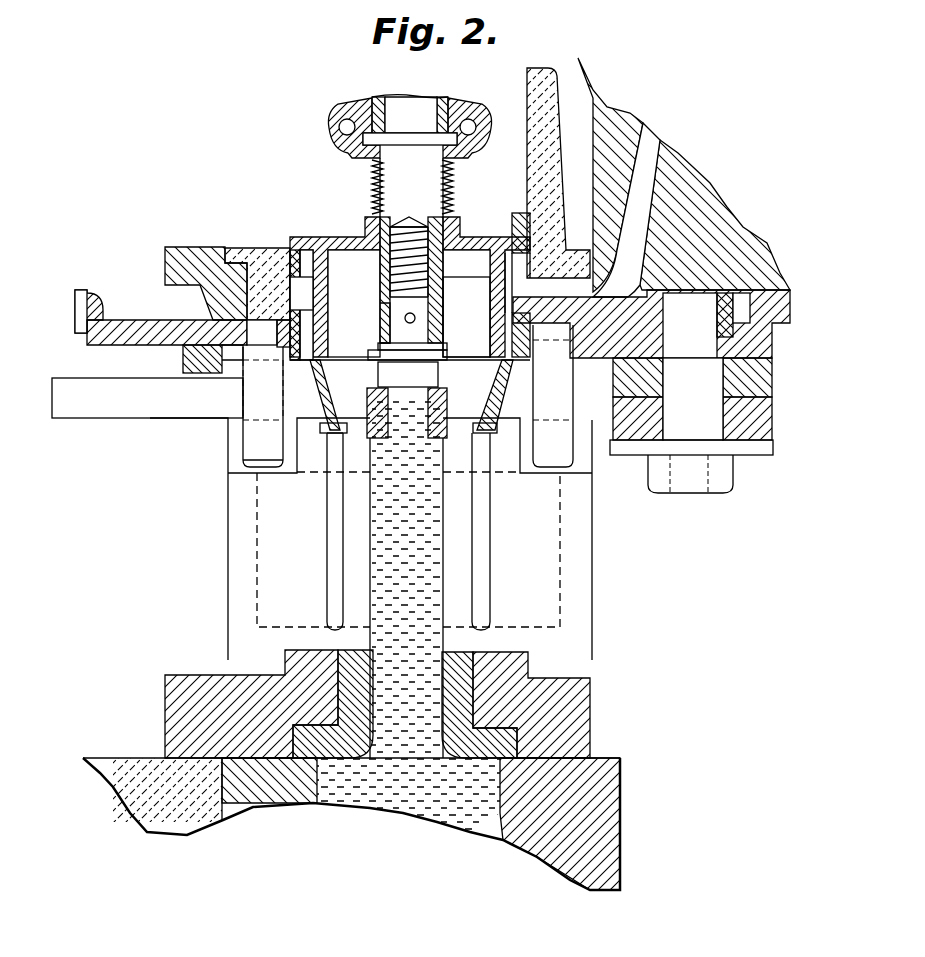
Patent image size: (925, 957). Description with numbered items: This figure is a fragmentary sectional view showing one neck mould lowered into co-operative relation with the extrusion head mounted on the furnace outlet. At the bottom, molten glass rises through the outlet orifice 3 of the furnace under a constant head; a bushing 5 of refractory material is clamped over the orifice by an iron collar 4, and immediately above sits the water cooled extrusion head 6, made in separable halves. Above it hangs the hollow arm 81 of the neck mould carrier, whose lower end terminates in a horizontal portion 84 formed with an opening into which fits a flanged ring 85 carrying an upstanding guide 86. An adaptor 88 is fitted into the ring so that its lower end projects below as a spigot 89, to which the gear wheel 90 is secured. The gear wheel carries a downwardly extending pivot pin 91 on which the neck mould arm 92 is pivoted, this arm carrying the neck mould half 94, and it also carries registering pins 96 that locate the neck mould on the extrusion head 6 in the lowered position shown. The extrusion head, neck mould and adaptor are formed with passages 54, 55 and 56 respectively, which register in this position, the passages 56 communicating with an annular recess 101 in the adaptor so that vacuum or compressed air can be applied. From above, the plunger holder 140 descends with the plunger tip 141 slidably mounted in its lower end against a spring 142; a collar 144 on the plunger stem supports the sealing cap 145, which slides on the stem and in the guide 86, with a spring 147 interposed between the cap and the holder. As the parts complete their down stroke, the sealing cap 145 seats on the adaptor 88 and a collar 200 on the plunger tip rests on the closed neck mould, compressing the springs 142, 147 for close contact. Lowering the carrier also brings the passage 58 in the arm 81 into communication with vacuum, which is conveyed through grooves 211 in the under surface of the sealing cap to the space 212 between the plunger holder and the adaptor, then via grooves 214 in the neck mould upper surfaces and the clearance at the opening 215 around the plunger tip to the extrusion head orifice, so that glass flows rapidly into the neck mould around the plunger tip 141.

The outlet orifice 3 is at (457, 803).
The iron collar 4 is at (538, 702).
The bushing 5 is at (497, 753).
The extrusion head 6 is at (240, 502).
The passage 54 is at (340, 572).
The passage 55 is at (327, 413).
The passage 56 is at (505, 334).
The passage 58 is at (626, 210).
The hollow arm 81 is at (613, 133).
The horizontal portion 84 is at (180, 262).
The flanged ring 85 is at (240, 248).
The upstanding guide 86 is at (540, 68).
The adaptor 88 is at (291, 250).
The spigot 89 is at (293, 315).
The gear wheel 90 is at (127, 333).
The pivot pin 91 is at (691, 425).
The neck mould arm 92 is at (147, 381).
The neck mould half 94 is at (357, 432).
The registering pin 96 is at (408, 396).
The annular recess 101 is at (305, 289).
The plunger holder 140 is at (412, 157).
The plunger tip 141 is at (408, 610).
The spring 142 is at (405, 225).
The collar 144 is at (380, 304).
The sealing cap 145 is at (317, 236).
The spring 147 is at (372, 174).
The collar 200 is at (407, 365).
The groove 211 is at (476, 290).
The space 212 is at (455, 200).
The groove 214 is at (341, 395).
The opening 215 is at (440, 376).